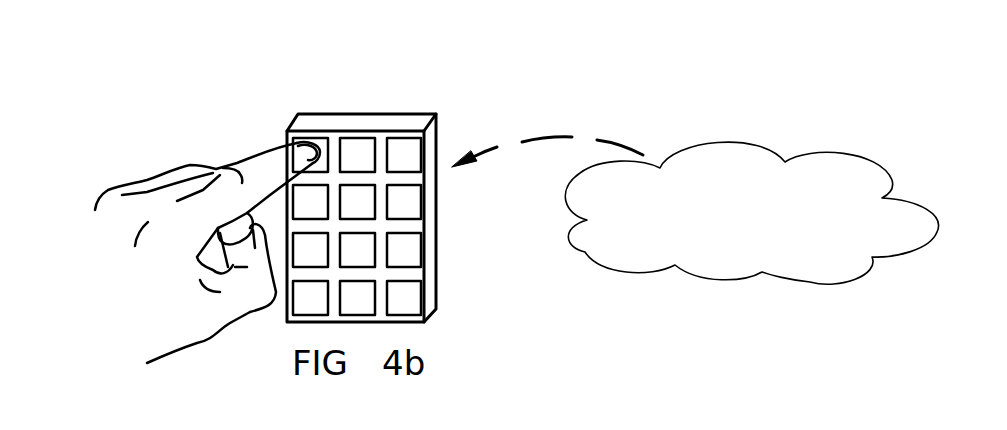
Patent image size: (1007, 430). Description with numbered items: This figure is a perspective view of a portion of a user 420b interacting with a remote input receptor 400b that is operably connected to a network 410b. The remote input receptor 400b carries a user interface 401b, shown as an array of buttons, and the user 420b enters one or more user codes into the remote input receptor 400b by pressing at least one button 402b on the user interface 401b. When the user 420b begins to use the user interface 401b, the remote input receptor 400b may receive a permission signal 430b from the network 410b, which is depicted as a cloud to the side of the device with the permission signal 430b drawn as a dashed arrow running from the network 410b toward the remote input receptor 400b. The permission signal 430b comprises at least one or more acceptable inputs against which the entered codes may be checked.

The remote input receptor 400b is at (315, 122).
The user interface 401b is at (372, 132).
The button 402b is at (398, 157).
The network 410b is at (663, 165).
The user 420b is at (173, 313).
The permission signal 430b is at (642, 152).